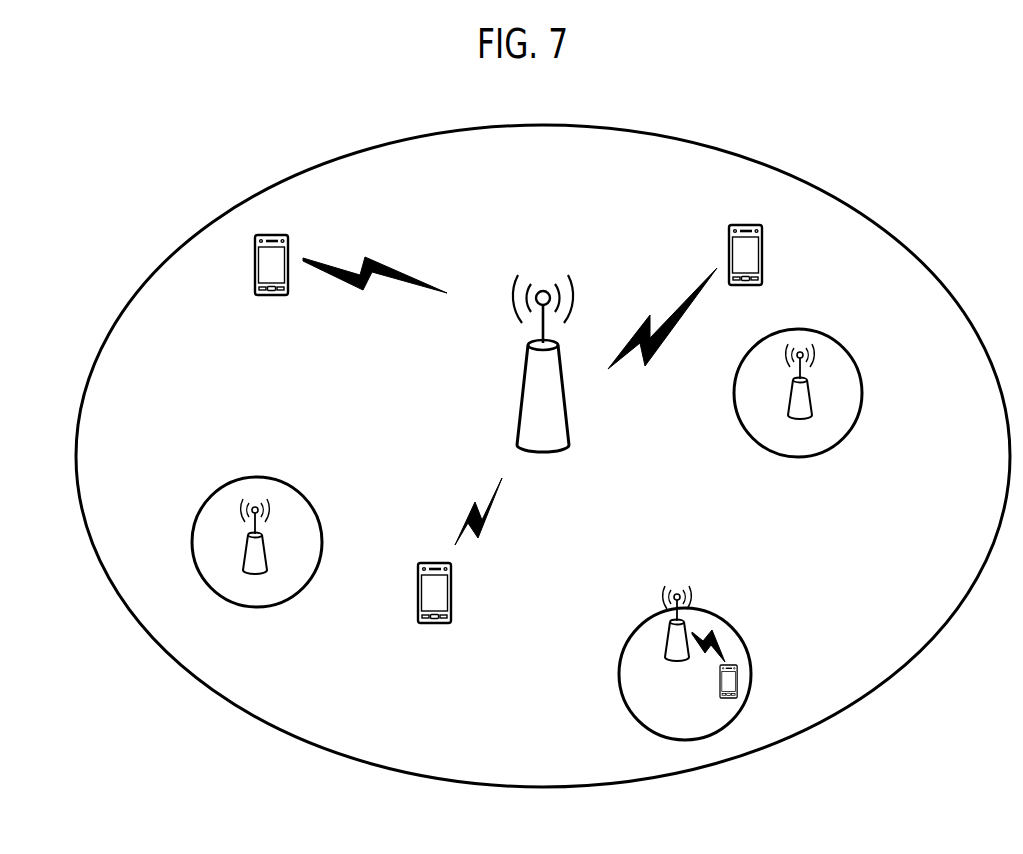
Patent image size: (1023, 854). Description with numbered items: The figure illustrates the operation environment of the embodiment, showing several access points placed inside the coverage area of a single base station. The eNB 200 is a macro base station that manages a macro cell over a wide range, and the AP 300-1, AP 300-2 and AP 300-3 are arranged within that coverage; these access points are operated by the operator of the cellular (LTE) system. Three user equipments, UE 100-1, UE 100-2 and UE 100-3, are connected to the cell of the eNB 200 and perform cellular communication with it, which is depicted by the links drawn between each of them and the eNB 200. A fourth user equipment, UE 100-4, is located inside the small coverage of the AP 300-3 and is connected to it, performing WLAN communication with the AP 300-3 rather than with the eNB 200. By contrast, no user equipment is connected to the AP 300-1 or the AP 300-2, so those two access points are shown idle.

The UE 100-1 is at (288, 250).
The UE 100-2 is at (450, 590).
The UE 100-3 is at (763, 265).
The UE 100-4 is at (737, 683).
The eNB 200 is at (523, 383).
The AP 300-1 is at (265, 553).
The AP 300-2 is at (807, 393).
The AP 300-3 is at (665, 648).